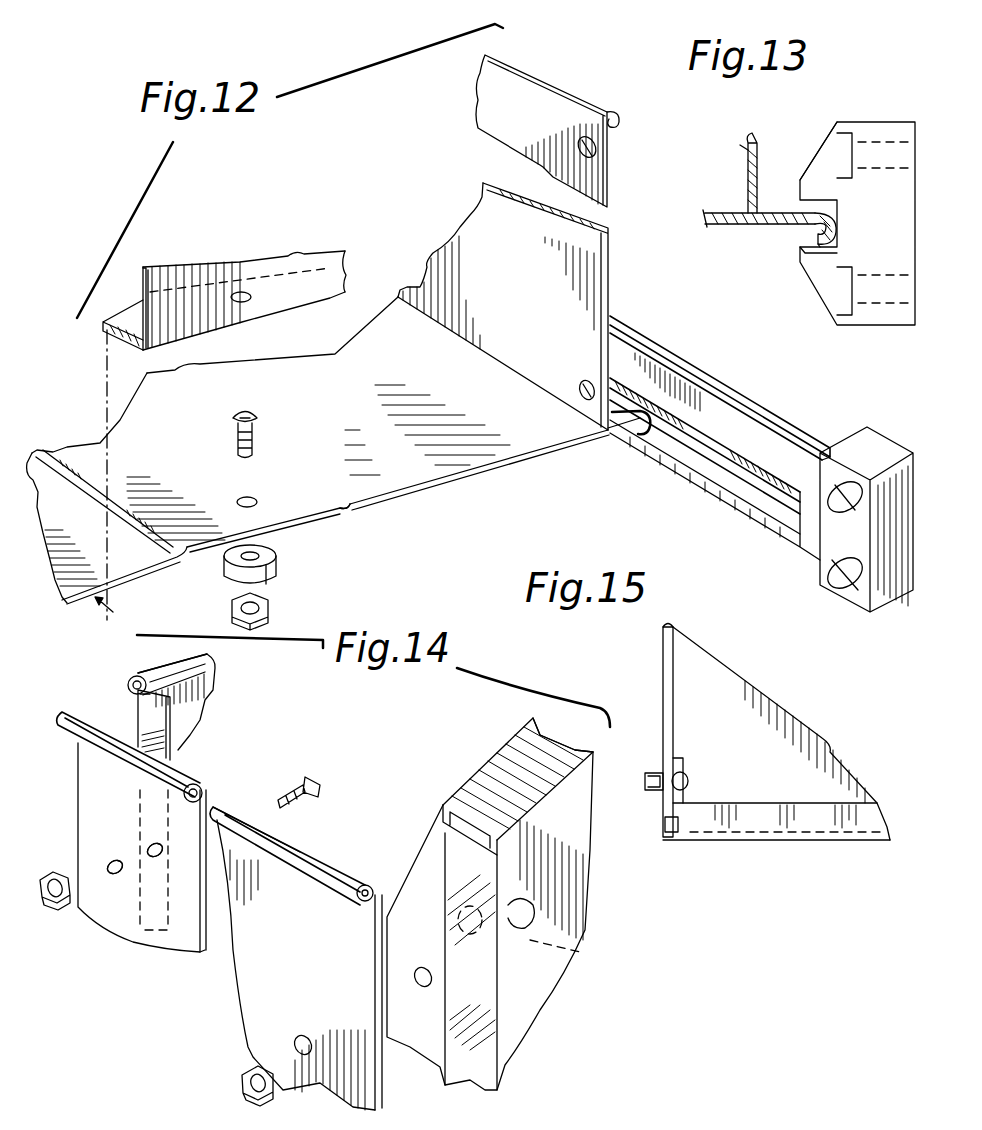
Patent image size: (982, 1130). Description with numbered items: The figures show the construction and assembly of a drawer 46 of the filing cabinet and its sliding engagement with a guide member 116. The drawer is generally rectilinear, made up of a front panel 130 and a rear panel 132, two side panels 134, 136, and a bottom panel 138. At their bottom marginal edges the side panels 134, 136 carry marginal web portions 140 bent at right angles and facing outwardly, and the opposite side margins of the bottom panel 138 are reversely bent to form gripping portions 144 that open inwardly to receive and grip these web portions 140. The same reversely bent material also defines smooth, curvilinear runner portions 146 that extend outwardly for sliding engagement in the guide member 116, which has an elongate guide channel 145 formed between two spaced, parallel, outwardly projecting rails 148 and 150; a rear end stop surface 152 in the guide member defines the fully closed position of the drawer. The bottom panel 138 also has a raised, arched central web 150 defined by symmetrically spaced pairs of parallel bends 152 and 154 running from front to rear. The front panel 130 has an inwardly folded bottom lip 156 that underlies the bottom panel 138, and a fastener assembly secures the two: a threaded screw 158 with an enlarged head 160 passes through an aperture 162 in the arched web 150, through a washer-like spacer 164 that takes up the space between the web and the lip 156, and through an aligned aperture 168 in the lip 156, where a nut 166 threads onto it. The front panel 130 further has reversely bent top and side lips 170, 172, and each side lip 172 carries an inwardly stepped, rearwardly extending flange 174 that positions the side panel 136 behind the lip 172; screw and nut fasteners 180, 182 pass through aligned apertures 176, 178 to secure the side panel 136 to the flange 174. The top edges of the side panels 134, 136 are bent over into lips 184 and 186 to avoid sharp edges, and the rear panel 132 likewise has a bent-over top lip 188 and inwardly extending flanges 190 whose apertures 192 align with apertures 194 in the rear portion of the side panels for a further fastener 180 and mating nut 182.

In FIG. 12, the drawer 46 is at (524, 469).
In FIG. 14, the drawer 46 is at (598, 923).
In FIG. 12, the guide member 116 is at (752, 398).
In FIG. 13, the guide member 116 is at (868, 313).
In FIG. 12, the front panel 130 is at (240, 265).
In FIG. 14, the front panel 130 is at (520, 1003).
In FIG. 14, the rear panel 132 is at (213, 692).
In FIG. 12, the side panel 134 is at (566, 287).
In FIG. 13, the side panel 134 is at (757, 150).
In FIG. 14, the side panel 136 is at (330, 951).
In FIG. 15, the side panel 136 is at (660, 682).
In FIG. 12, the bottom panel 138 is at (482, 413).
In FIG. 12, the marginal web portion 140 is at (605, 423).
In FIG. 13, the marginal web portion 140 is at (748, 185).
In FIG. 12, the reversely bent gripping portion 144 is at (630, 436).
In FIG. 13, the reversely bent gripping portion 144 is at (778, 226).
In FIG. 12, the guide track or channel 145 is at (717, 473).
In FIG. 13, the guide track or channel 145 is at (835, 243).
In FIG. 13, the runner portion 146 is at (840, 213).
In FIG. 12, the rail 148 is at (750, 513).
In FIG. 13, the rail 148 is at (803, 253).
In FIG. 12, the rail 150 is at (174, 446).
In FIG. 13, the rail 150 is at (822, 170).
In FIG. 12, the rear end stop surface 152 is at (350, 500).
In FIG. 12, the pair of parallel bends 154 is at (107, 527).
In FIG. 12, the lip portion 156 is at (120, 300).
In FIG. 12, the threaded screw-type fastener 158 is at (258, 428).
In FIG. 12, the enlarged head 160 is at (250, 412).
In FIG. 12, the through aperture 162 is at (240, 500).
In FIG. 12, the washer-like spacer member 164 is at (278, 558).
In FIG. 12, the nut-type fastener 166 is at (270, 605).
In FIG. 12, the through aperture 168 is at (262, 297).
In FIG. 14, the top peripheral lip 170 is at (482, 780).
In FIG. 15, the top peripheral lip 170 is at (797, 827).
In FIG. 14, the side peripheral lip 172 is at (480, 1057).
In FIG. 15, the side peripheral lip 172 is at (663, 837).
In FIG. 14, the flange portion 174 is at (418, 888).
In FIG. 15, the flange portion 174 is at (687, 797).
In FIG. 14, the through aperture 176 is at (420, 965).
In FIG. 14, the through aperture 178 is at (303, 1036).
In FIG. 14, the screw-type fastener 180 is at (310, 782).
In FIG. 15, the screw-type fastener 180 is at (680, 778).
In FIG. 14, the nut-type fastener 182 is at (44, 872).
In FIG. 15, the nut-type fastener 182 is at (660, 797).
In FIG. 12, the bent over lip portion 184 is at (614, 120).
In FIG. 14, the bent over lip portion 186 is at (325, 860).
In FIG. 15, the bent over lip portion 186 is at (662, 640).
In FIG. 14, the top bent over lip portion 188 is at (155, 675).
In FIG. 14, the inwardly extending flange portion 190 is at (150, 708).
In FIG. 14, the through aperture 192 is at (142, 925).
In FIG. 14, the through aperture 194 is at (110, 880).